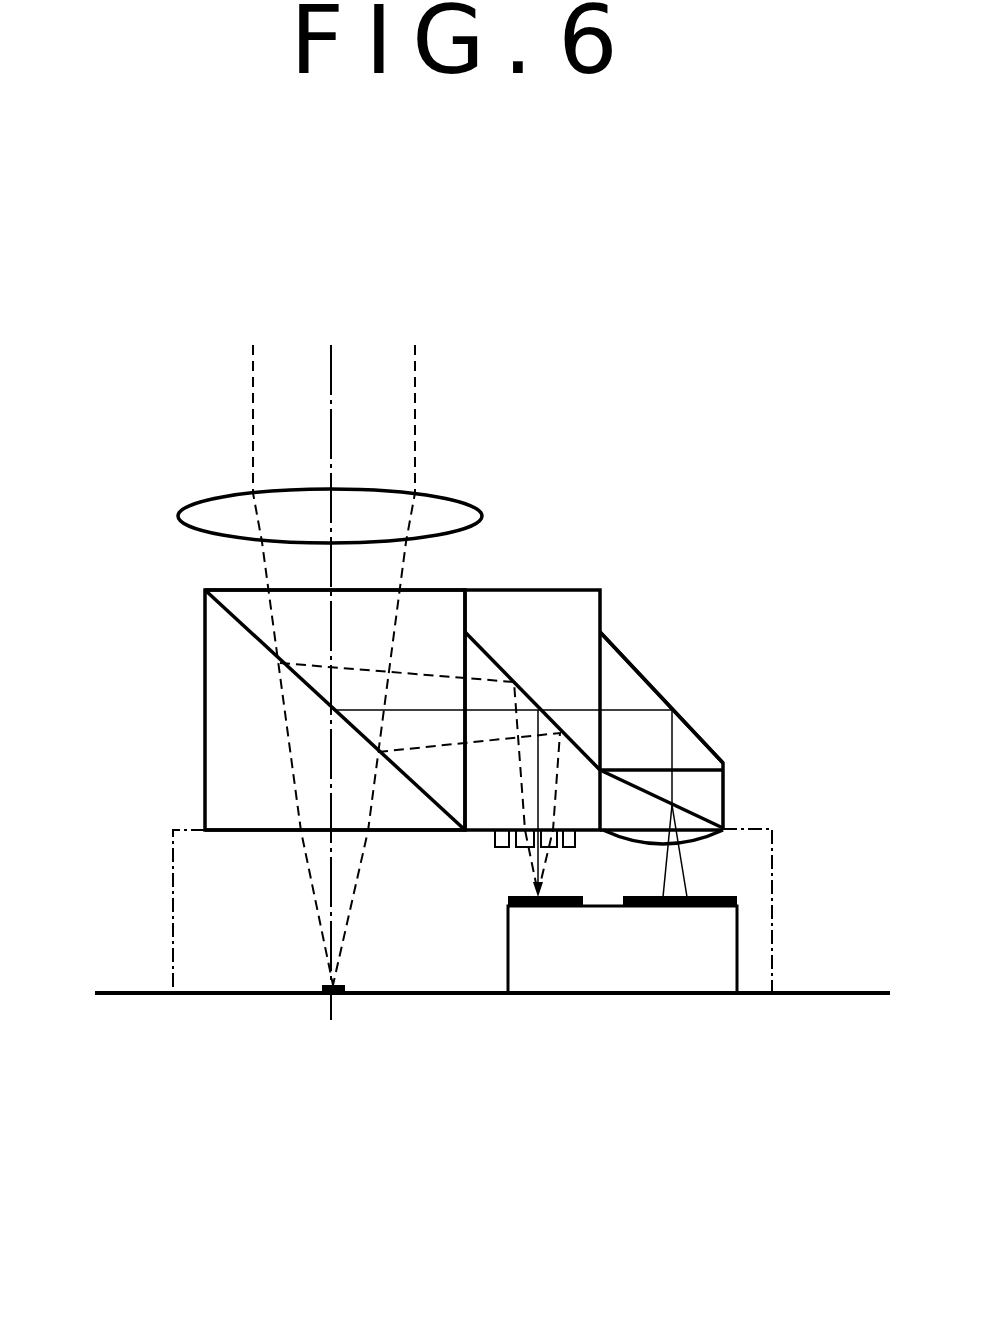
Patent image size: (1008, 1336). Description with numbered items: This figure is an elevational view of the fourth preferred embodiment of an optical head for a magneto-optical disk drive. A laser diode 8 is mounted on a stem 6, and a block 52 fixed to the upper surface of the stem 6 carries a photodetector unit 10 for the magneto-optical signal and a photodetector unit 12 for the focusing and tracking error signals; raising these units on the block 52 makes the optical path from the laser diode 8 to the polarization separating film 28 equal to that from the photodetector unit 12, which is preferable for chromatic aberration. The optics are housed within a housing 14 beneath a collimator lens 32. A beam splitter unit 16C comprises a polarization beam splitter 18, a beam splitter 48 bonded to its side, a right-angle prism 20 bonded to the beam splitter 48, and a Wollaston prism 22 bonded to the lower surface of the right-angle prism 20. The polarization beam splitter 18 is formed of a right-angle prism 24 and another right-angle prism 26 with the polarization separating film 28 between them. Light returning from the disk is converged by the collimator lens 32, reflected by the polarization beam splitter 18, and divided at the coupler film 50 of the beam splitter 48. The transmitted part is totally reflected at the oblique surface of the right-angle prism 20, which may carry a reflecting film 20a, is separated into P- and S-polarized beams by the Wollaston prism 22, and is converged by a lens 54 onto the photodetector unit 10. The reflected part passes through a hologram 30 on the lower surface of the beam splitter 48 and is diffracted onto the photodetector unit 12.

The stem 6 is at (823, 988).
The laser diode 8 is at (325, 997).
The photodetector unit 10 is at (680, 910).
The photodetector unit 12 is at (538, 910).
The housing 14 is at (775, 892).
The beam splitter unit 16C is at (603, 572).
The polarization beam splitter 18 is at (205, 683).
The right-angle prism 20 is at (630, 685).
The reflecting film 20a is at (700, 735).
The Wollaston prism 22 is at (727, 787).
The right-angle prism 24 is at (238, 748).
The right-angle prism 26 is at (432, 610).
The polarization separating film 28 is at (247, 637).
The hologram 30 is at (495, 837).
The collimator lens 32 is at (231, 507).
The beam splitter 48 is at (538, 589).
The coupler film 50 is at (500, 660).
The block 52 is at (615, 975).
The lens 54 is at (715, 843).